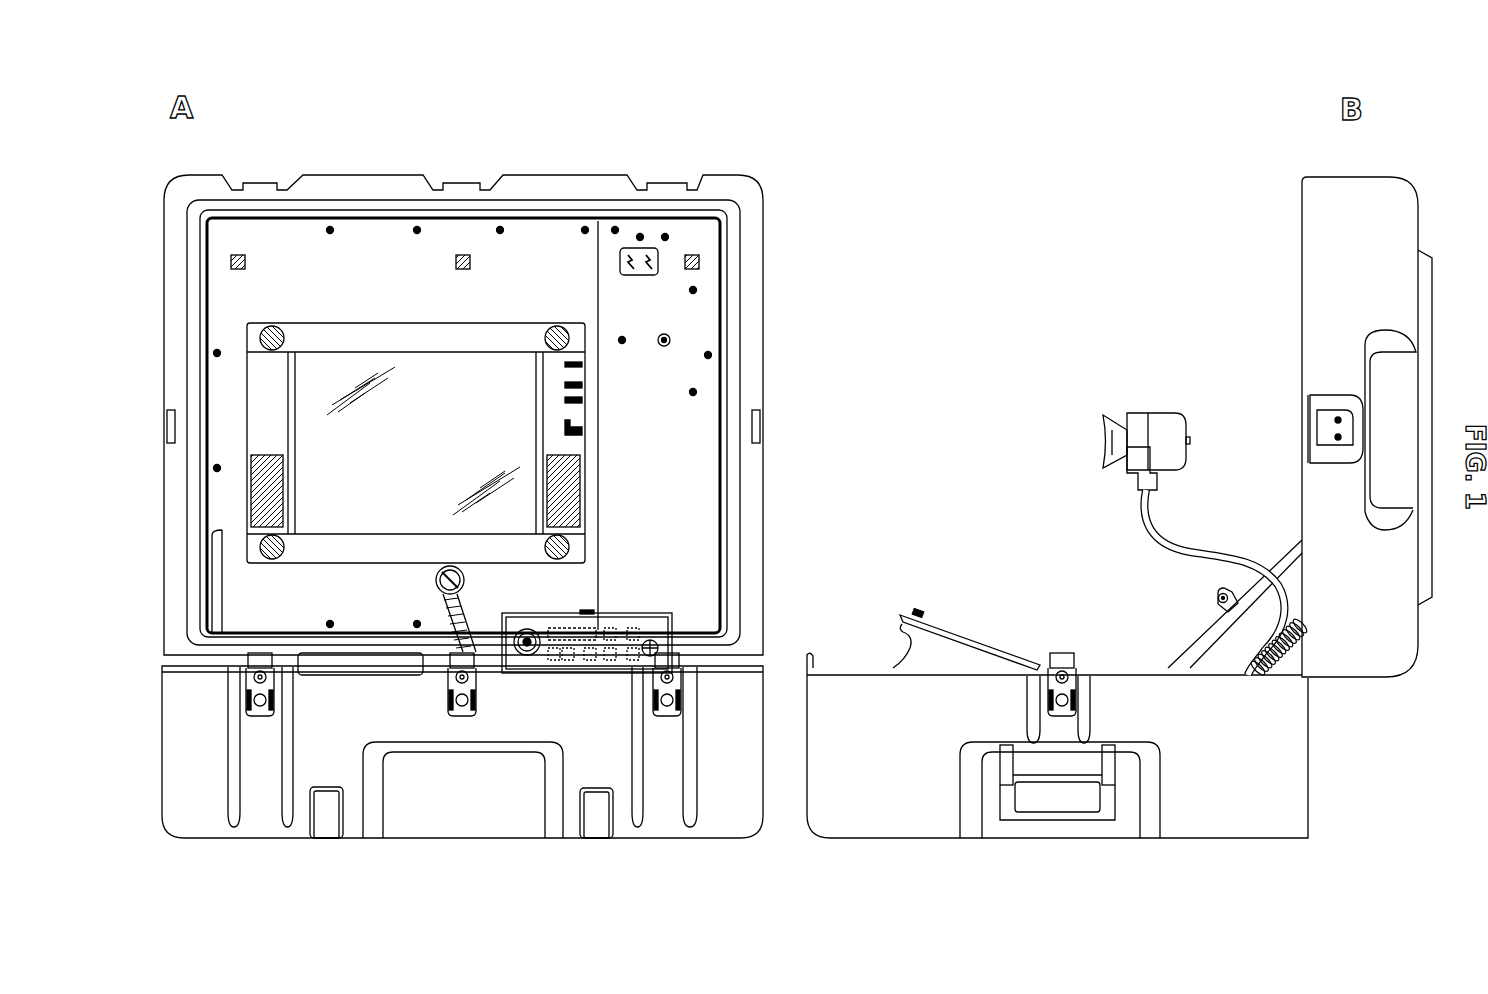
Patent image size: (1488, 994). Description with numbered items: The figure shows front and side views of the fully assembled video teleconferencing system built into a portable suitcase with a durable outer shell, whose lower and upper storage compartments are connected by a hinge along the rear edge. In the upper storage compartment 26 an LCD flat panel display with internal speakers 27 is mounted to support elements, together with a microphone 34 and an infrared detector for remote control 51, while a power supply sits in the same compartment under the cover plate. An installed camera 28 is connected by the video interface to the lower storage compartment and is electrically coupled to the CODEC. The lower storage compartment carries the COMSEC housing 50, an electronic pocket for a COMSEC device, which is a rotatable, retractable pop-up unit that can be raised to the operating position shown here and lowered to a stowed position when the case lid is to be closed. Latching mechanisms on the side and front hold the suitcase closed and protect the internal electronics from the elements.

The upper storage compartment 26 is at (1300, 290).
The LCD flat panel display with internal speakers 27 is at (365, 322).
The camera 28 is at (1132, 415).
The microphone 34 is at (674, 334).
The COMSEC housing 50 is at (972, 636).
The infrared detector for remote control 51 is at (648, 247).